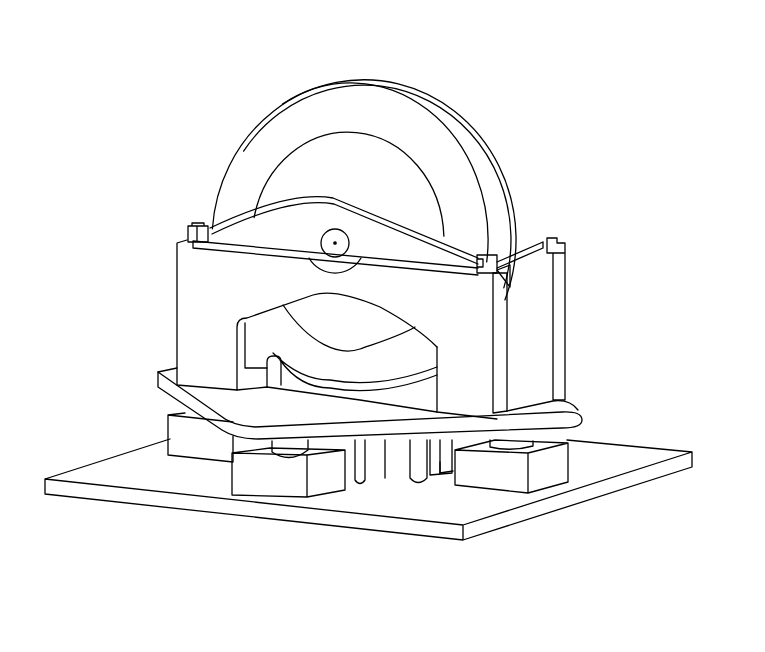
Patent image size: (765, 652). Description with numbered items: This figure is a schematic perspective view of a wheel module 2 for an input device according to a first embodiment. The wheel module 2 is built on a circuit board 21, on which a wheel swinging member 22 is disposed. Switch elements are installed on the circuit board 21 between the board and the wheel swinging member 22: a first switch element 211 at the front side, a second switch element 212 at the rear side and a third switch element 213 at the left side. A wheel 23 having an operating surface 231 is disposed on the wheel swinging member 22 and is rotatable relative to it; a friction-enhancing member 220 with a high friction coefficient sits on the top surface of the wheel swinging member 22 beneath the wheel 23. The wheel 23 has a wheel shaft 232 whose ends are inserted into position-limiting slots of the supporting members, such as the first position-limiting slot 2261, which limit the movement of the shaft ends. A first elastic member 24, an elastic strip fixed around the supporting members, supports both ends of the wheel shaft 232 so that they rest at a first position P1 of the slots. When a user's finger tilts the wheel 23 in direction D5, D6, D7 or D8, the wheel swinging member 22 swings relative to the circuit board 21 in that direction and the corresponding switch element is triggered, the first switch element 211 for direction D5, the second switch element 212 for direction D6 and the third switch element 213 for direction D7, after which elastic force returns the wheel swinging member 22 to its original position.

The wheel module 2 is at (670, 101).
The circuit board 21 is at (628, 456).
The first switch element 211 is at (175, 443).
The second switch element 212 is at (555, 468).
The third switch element 213 is at (267, 487).
The wheel swinging member 22 is at (583, 301).
The friction-enhancing member 220 is at (278, 373).
The first position-limiting slot 2261 is at (340, 263).
The wheel 23 is at (388, 190).
The operating surface 231 is at (478, 155).
The wheel shaft 232 is at (323, 229).
The first elastic member 24 is at (242, 247).
The first position P1 is at (336, 242).
The direction D5 is at (269, 49).
The direction D6 is at (430, 52).
The direction D7 is at (245, 103).
The direction D8 is at (440, 35).